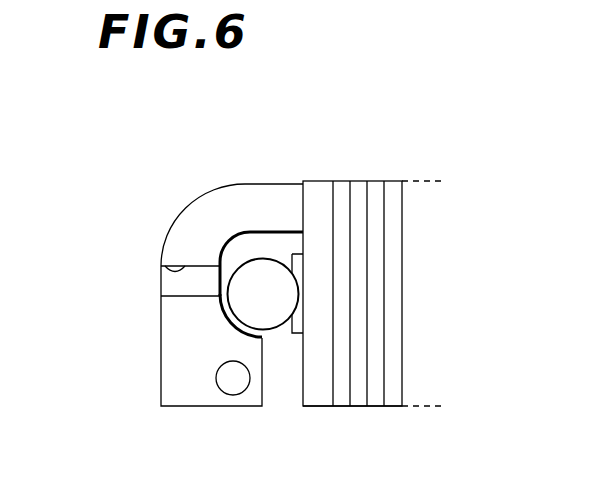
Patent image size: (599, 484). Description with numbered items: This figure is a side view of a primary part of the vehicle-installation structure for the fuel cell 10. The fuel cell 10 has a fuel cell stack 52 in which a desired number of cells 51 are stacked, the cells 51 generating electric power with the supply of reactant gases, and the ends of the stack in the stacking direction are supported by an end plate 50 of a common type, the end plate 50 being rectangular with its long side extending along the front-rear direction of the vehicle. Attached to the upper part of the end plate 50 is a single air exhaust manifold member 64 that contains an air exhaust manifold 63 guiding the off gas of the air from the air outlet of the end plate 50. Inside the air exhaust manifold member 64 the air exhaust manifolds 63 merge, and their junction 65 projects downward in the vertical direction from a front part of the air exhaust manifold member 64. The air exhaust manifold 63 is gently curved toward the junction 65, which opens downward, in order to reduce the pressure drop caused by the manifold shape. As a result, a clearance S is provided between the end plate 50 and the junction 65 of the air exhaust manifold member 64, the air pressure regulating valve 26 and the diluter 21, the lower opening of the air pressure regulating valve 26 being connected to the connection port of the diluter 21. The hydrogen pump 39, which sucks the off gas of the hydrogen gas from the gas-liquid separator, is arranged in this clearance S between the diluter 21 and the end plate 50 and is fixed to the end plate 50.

The fuel cell 10 is at (396, 163).
The diluter 21 is at (151, 353).
The air pressure regulating valve 26 is at (178, 287).
The hydrogen pump 39 is at (255, 278).
The end plate 50 is at (322, 190).
The cells 51 is at (397, 350).
The fuel cell stack 52 is at (384, 412).
The air exhaust manifold 63 is at (290, 203).
The air exhaust manifold member 64 is at (214, 183).
The junction 65 is at (160, 265).
The clearance S is at (268, 244).